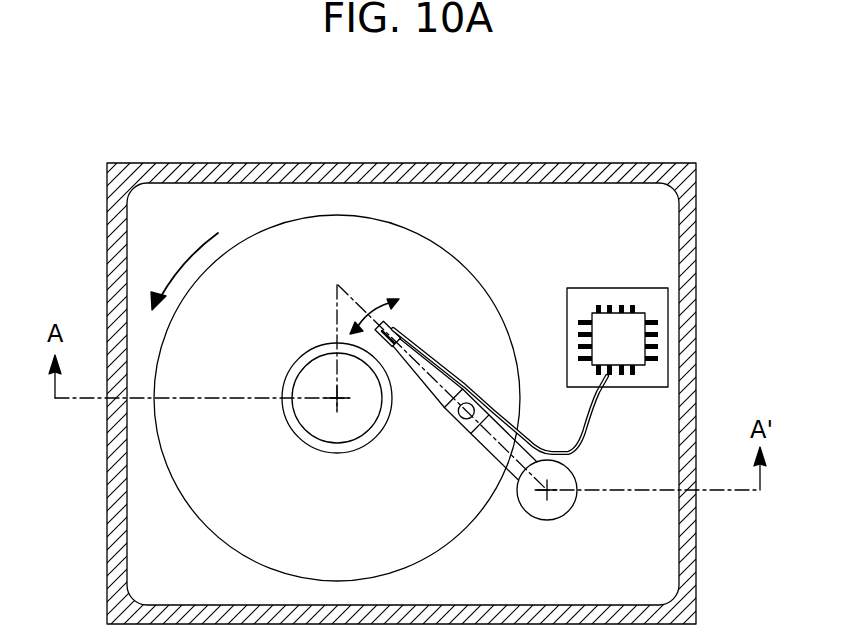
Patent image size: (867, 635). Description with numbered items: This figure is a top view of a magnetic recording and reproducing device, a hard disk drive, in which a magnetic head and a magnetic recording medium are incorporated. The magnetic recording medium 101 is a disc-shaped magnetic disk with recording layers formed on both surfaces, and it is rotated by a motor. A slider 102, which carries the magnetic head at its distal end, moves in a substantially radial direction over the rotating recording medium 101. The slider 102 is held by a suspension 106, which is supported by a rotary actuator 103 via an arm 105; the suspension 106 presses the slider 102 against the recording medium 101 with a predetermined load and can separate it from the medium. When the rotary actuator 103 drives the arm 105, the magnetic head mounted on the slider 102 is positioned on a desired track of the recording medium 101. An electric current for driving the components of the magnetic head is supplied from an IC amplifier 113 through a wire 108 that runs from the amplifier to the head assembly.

The magnetic recording medium 101 is at (333, 221).
The slider 102 is at (399, 322).
The rotary actuator 103 is at (540, 518).
The arm 105 is at (480, 452).
The suspension 106 is at (427, 388).
The wire 108 is at (602, 407).
The IC amplifier 113 is at (643, 314).